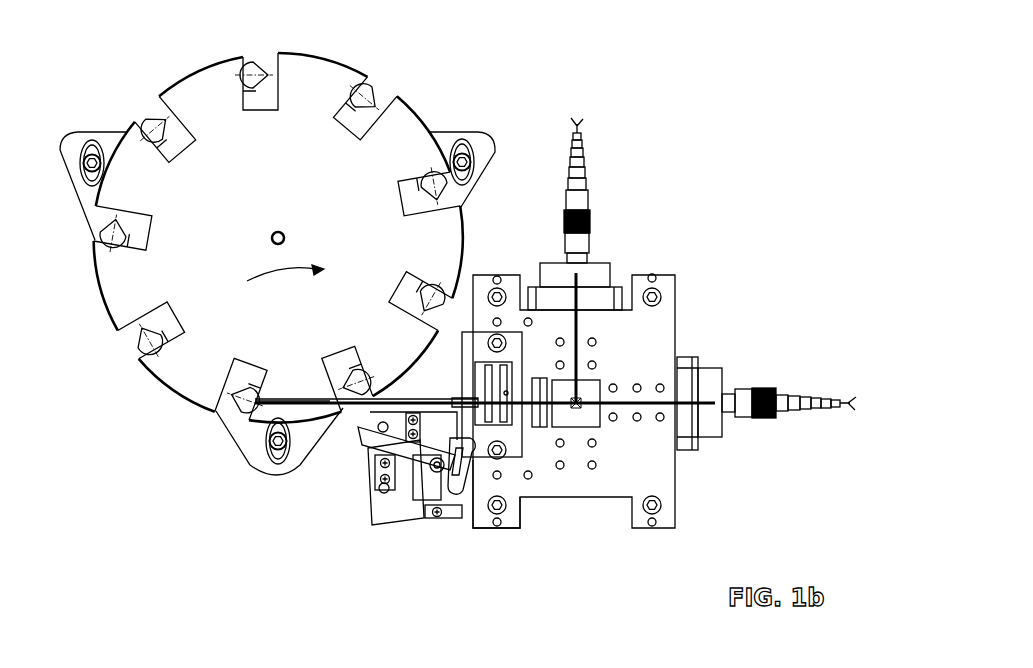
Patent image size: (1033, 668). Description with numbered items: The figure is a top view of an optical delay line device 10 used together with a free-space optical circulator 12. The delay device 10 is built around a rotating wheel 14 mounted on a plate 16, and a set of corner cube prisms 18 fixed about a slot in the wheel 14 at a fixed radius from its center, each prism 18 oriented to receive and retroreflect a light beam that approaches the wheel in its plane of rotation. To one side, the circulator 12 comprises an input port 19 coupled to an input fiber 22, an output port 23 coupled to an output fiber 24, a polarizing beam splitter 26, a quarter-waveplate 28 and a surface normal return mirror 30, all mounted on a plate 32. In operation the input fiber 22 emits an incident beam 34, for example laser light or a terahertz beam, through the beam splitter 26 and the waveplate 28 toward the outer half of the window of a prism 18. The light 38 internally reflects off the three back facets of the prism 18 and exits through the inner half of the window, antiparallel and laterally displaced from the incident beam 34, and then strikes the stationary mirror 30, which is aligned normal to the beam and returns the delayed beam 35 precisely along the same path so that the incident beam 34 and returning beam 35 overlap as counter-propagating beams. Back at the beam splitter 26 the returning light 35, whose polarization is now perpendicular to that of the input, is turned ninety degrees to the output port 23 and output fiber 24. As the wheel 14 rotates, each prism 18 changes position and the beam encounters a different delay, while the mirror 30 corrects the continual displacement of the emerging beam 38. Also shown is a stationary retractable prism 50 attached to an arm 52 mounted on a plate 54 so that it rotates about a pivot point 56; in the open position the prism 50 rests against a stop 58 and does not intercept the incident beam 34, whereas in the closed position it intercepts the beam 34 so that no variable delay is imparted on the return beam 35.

The optical delay line device 10 is at (110, 356).
The optical circulator 12 is at (577, 512).
The rotating wheel 14 is at (200, 68).
The plate 16 is at (75, 190).
The corner cube prisms 18 is at (148, 120).
The input port 19 is at (693, 360).
The input fiber 22 is at (822, 398).
The output port 23 is at (613, 288).
The output fiber 24 is at (580, 153).
The polarizing beam splitter 26 is at (578, 410).
The quarter-waveplate 28 is at (543, 430).
The surface normal return mirror 30 is at (483, 360).
The plate 32 is at (490, 530).
The incident beam 34 is at (343, 408).
The returning delayed beam 35 is at (578, 322).
The emerging beam 38 is at (400, 398).
The stationary retractable prism 50 is at (375, 440).
The arm 52 is at (402, 512).
The plate 54 is at (378, 507).
The pivot point 56 is at (423, 516).
The stop 58 is at (380, 466).